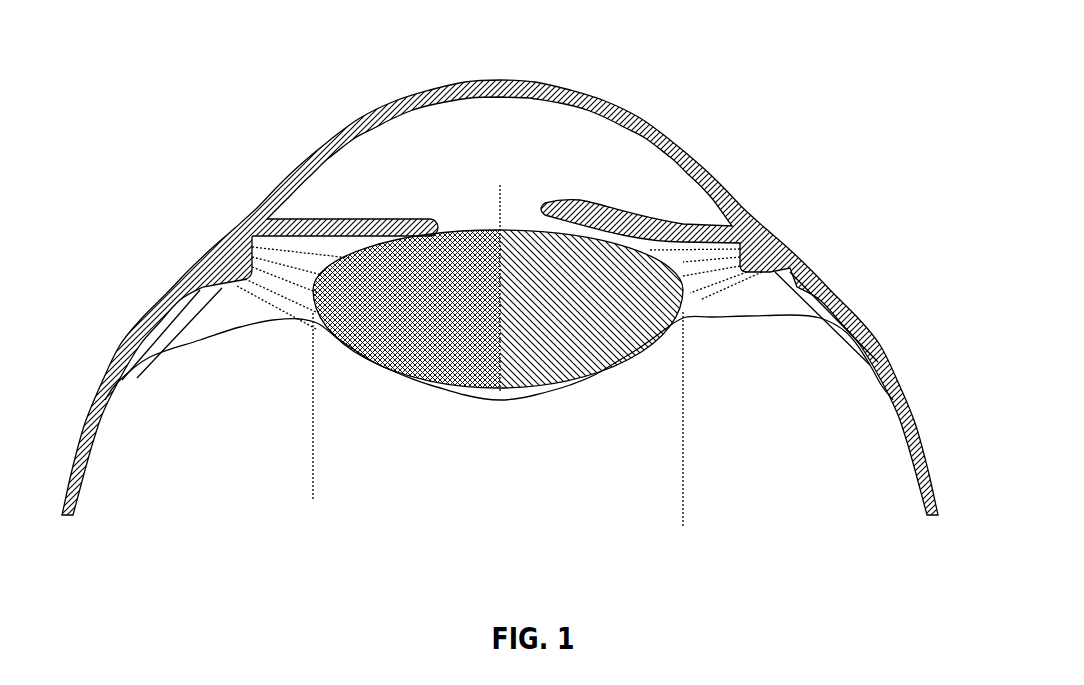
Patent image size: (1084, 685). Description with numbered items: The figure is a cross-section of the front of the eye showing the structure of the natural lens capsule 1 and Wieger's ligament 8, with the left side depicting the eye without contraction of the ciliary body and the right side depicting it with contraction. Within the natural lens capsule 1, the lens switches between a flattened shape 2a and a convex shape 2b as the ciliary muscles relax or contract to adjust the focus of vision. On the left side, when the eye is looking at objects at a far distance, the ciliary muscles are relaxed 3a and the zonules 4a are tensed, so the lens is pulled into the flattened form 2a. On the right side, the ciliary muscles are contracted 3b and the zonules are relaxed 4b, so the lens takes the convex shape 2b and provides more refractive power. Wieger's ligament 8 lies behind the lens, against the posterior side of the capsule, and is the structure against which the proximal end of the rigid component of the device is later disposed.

The natural lens capsule 1 is at (547, 217).
The flattened lens 2a is at (410, 303).
The convex lens 2b is at (593, 303).
The relaxed ciliary muscles 3a is at (232, 290).
The contracted ciliary muscles 3b is at (770, 272).
The tensed zonules 4a is at (293, 300).
The relaxed zonules 4b is at (735, 212).
The Wieger's ligament 8 is at (612, 372).